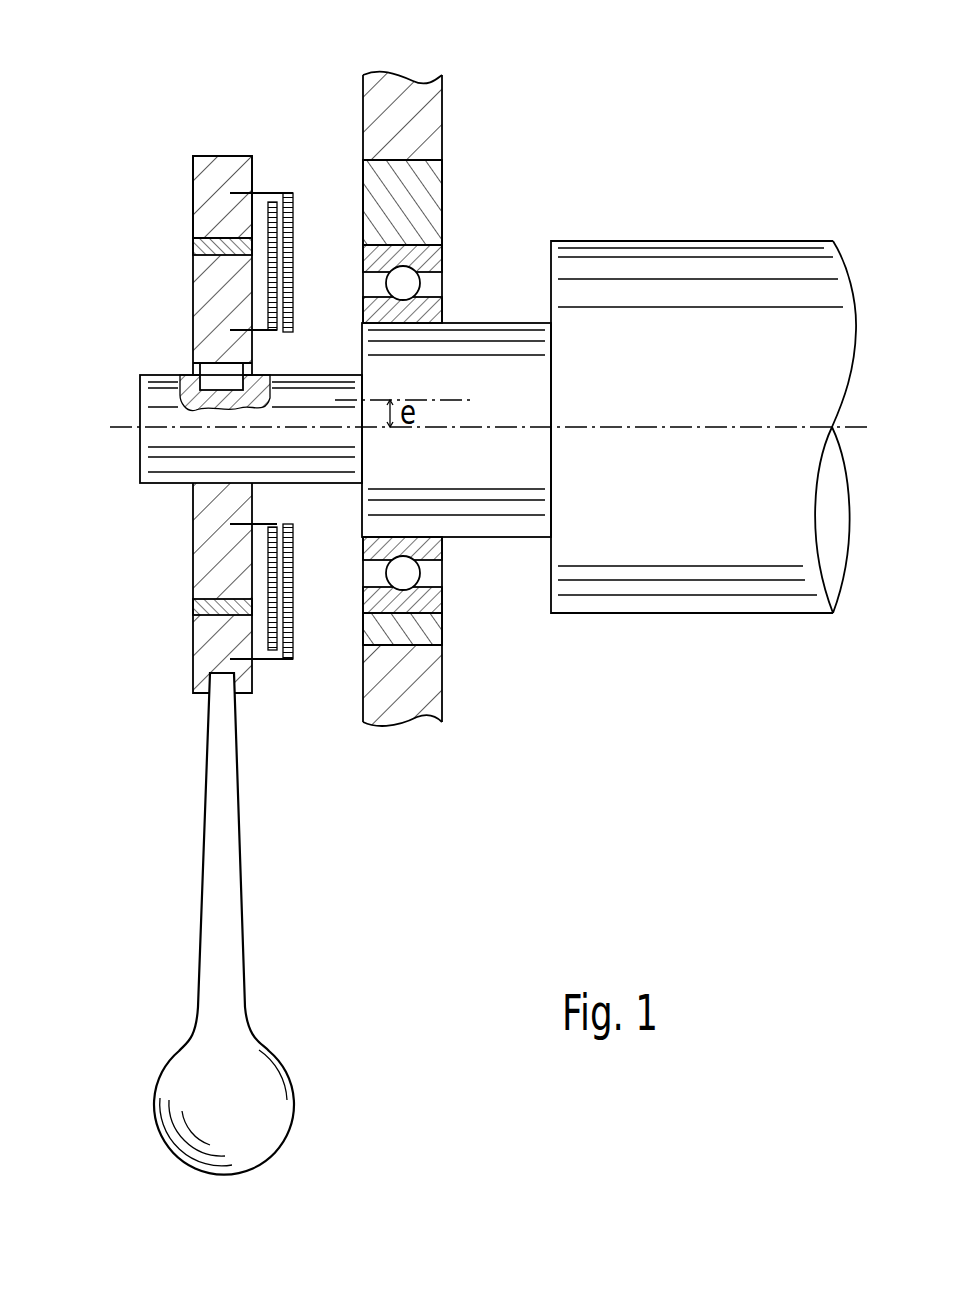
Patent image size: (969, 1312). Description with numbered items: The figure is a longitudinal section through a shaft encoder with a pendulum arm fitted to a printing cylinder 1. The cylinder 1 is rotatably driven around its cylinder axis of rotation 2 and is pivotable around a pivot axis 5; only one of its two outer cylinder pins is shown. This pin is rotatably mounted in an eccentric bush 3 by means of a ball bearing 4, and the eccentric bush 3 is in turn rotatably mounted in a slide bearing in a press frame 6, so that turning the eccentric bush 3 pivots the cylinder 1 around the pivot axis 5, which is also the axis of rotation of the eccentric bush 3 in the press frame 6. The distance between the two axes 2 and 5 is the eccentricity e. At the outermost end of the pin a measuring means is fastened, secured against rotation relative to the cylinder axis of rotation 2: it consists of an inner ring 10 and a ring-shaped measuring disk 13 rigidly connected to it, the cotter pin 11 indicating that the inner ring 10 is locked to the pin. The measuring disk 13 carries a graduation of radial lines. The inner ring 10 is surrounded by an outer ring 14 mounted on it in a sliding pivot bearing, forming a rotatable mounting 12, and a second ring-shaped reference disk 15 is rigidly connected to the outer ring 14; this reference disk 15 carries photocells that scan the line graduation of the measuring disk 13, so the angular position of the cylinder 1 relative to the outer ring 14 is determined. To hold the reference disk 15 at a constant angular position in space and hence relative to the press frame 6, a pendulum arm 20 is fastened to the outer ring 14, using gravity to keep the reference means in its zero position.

The printing cylinder 1 is at (751, 239).
The cylinder axis of rotation 2 is at (663, 425).
The eccentric bush 3 is at (422, 195).
The ball bearing 4 is at (442, 260).
The pivot axis 5 is at (470, 398).
The press frame 6 is at (413, 90).
The inner ring 10 is at (169, 424).
The cotter pin 11 is at (213, 378).
The rotatable mounting 12 is at (205, 608).
The measuring disk 13 is at (268, 215).
The outer ring 14 is at (203, 207).
The reference disk 15 is at (295, 212).
The pendulum arm 20 is at (263, 1080).